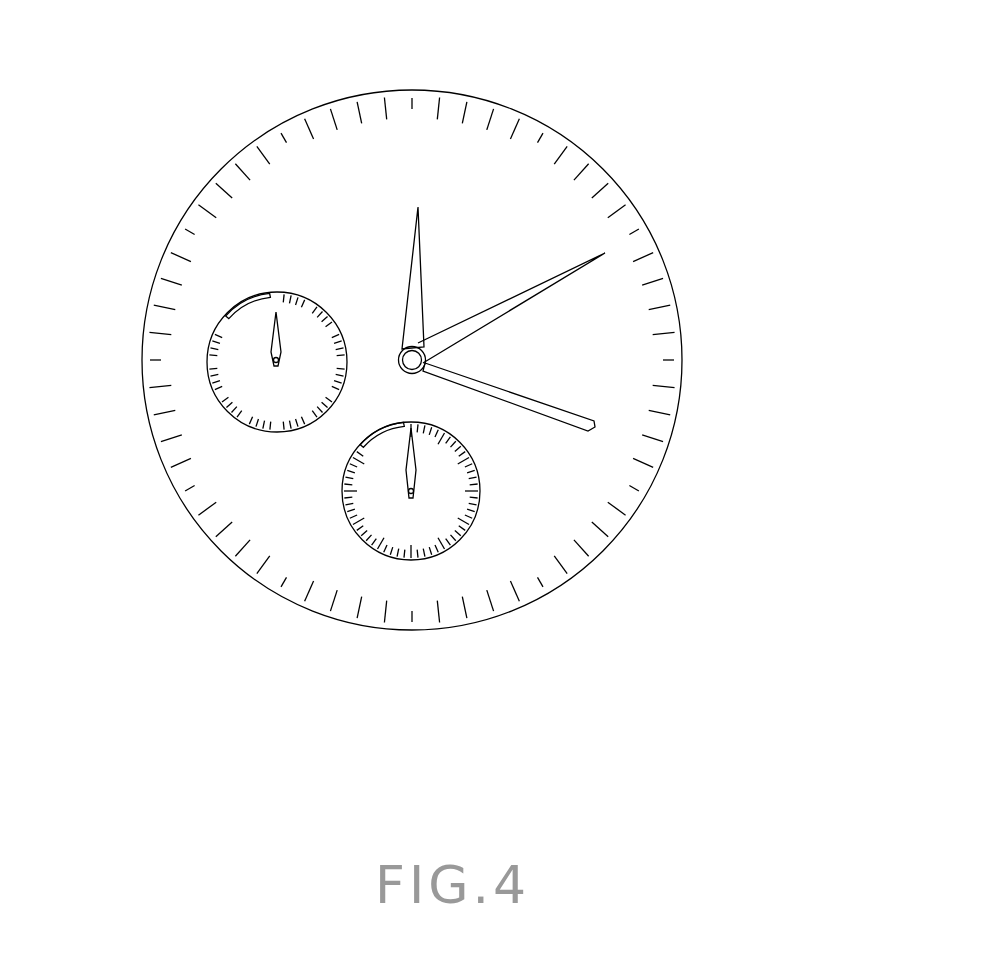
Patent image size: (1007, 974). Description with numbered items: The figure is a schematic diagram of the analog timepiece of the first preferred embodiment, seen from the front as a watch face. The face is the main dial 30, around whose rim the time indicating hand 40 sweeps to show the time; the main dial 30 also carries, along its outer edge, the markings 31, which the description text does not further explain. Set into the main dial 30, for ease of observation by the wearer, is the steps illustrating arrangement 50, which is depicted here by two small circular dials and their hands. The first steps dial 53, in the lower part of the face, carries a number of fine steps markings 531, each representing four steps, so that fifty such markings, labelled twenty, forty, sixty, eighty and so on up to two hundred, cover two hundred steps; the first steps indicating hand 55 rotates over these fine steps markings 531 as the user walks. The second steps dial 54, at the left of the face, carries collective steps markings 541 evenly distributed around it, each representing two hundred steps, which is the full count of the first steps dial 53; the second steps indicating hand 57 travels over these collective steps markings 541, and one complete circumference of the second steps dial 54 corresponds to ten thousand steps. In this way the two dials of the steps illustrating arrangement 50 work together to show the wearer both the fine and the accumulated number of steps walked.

The main dial 30 is at (597, 330).
The time scale markings 31 is at (660, 413).
The time indicating hand 40 is at (523, 293).
The steps illustrating arrangement 50 is at (410, 555).
The first steps dial 53 is at (536, 624).
The fine steps markings 531 is at (408, 560).
The first steps indicating hand 55 is at (413, 480).
The second steps dial 54 is at (199, 483).
The collective steps markings 541 is at (246, 420).
The second steps indicating hand 57 is at (273, 355).